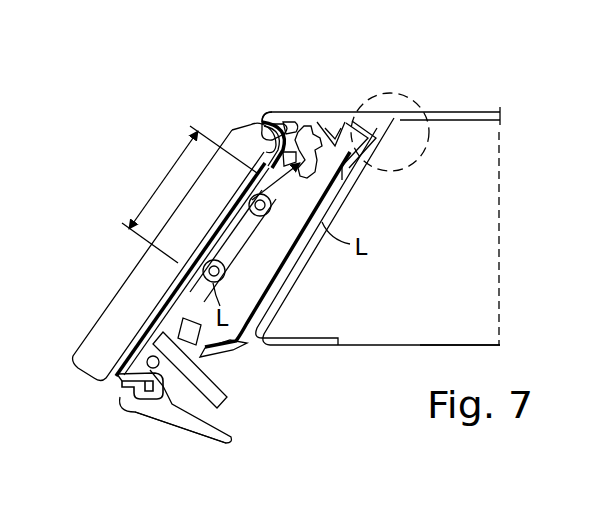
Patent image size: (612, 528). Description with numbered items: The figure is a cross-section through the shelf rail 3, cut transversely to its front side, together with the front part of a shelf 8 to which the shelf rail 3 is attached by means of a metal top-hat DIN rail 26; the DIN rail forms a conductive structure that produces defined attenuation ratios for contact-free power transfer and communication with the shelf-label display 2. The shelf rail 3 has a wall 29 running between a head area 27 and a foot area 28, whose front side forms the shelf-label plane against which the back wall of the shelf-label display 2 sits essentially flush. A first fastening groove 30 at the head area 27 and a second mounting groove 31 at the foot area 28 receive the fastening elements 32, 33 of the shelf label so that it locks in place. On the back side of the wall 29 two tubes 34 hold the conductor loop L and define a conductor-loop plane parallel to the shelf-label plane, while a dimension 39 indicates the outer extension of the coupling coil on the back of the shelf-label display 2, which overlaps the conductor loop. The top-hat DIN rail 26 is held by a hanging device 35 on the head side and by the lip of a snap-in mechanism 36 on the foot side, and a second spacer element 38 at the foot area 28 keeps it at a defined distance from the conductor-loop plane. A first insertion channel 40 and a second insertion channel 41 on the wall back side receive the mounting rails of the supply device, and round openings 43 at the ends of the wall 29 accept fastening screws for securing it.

The shelf-label display 2 is at (127, 315).
The shelf rail 3 is at (262, 108).
The shelf 8 is at (484, 228).
The top-hat DIN rail 26 is at (245, 352).
The head area 27 is at (327, 104).
The foot area 28 is at (156, 432).
The wall 29 is at (232, 228).
The first fastening groove 30 is at (268, 110).
The second mounting groove 31 is at (150, 400).
The fastening element 32 is at (262, 128).
The fastening element 33 is at (122, 392).
The tubes 34 is at (272, 212).
The hanging device 35 is at (392, 96).
The snap-in mechanism 36 is at (222, 398).
The second spacer element 38 is at (207, 362).
The dimension 39 is at (173, 163).
The first insertion channel 40 is at (267, 157).
The second insertion channel 41 is at (180, 321).
The round opening 43 is at (308, 126).